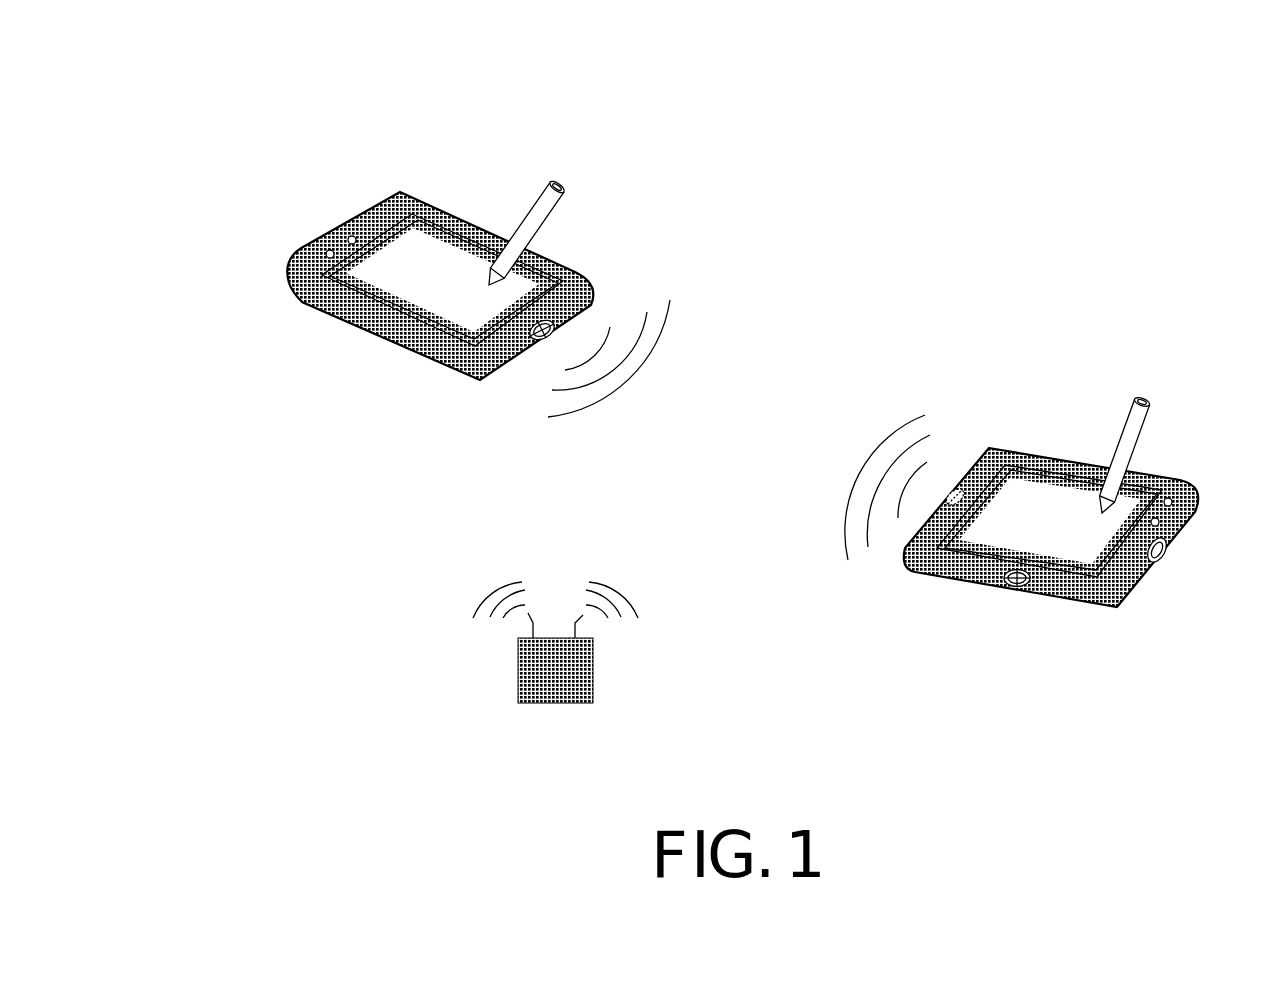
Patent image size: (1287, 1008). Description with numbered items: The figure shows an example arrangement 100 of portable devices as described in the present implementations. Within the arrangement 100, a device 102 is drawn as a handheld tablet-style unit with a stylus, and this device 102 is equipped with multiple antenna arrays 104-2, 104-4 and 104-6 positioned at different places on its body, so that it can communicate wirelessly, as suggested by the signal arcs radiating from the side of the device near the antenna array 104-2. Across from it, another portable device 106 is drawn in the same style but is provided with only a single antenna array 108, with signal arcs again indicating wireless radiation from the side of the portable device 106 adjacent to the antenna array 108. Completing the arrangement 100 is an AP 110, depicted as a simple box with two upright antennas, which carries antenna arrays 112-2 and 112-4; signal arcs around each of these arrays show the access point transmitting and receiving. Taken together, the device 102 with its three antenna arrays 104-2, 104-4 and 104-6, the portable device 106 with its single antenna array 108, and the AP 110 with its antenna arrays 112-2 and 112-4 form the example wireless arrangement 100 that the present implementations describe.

The arrangement 100 is at (208, 93).
The device 102 is at (1155, 350).
The antenna array 104-2 is at (962, 487).
The antenna array 104-4 is at (1008, 587).
The antenna array 104-6 is at (1165, 545).
The portable device 106 is at (333, 198).
The antenna array 108 is at (555, 320).
The AP 110 is at (488, 703).
The antenna array 112-2 is at (585, 625).
The antenna array 112-4 is at (535, 613).